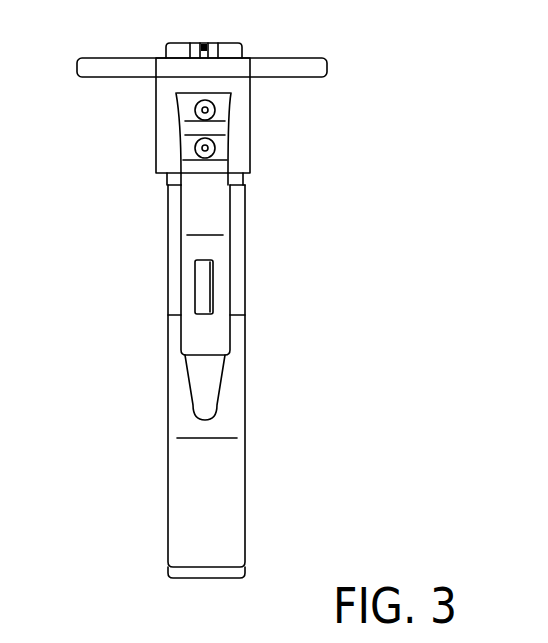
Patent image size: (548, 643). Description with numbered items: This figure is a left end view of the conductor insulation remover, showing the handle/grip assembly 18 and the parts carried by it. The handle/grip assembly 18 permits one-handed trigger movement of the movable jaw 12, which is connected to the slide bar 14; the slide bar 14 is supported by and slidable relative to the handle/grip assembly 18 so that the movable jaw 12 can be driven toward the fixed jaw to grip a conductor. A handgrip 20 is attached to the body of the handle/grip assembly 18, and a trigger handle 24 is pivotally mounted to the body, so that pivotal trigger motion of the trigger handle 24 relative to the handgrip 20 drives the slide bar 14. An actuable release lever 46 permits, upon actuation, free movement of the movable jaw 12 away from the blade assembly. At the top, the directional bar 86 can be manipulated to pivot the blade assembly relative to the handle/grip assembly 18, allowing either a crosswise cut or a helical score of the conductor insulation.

The directional bar 86 is at (285, 58).
The movable jaw 12 is at (252, 128).
The slide bar 14 is at (214, 271).
The actuable release lever 46 is at (220, 398).
The trigger handle 24 is at (168, 503).
The handle/grip assembly 18 is at (246, 510).
The handgrip 20 is at (233, 578).